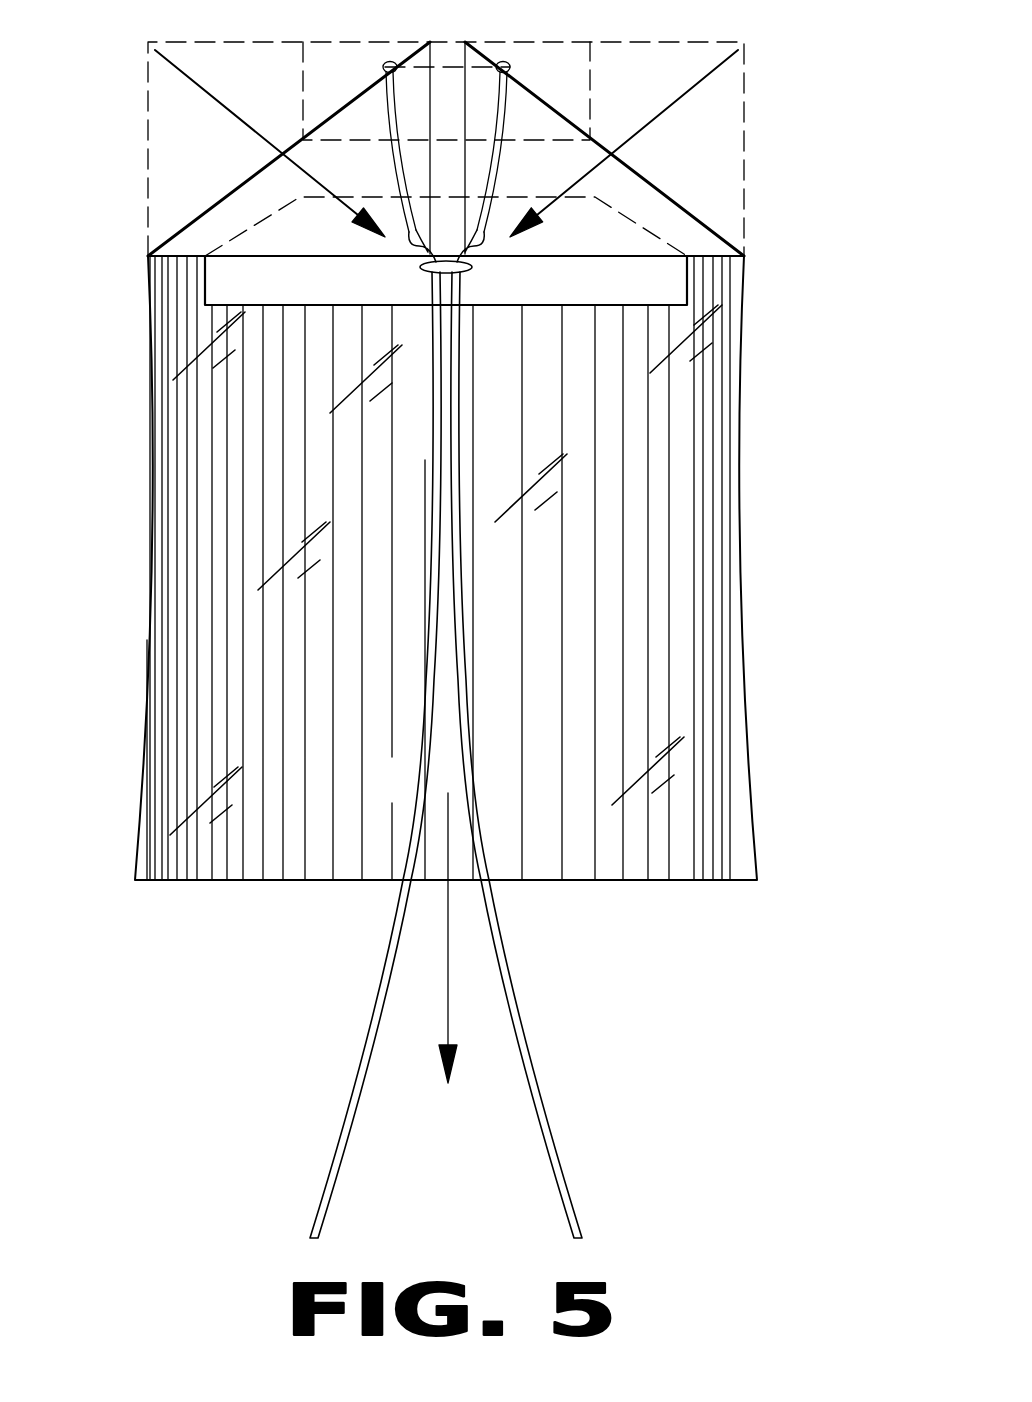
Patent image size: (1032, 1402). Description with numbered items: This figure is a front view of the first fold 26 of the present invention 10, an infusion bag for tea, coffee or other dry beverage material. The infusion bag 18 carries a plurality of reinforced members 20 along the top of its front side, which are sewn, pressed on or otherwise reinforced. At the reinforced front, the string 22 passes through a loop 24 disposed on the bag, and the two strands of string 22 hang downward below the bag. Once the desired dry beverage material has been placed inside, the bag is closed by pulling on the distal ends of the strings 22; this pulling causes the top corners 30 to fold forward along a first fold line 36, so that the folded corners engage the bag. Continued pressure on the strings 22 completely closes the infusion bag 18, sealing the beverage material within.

The present invention 10 is at (481, 623).
The infusion bag 18 is at (200, 698).
The reinforced members 20 is at (228, 272).
The strings 22 is at (560, 1182).
The loop 24 is at (472, 270).
The first fold 26 is at (200, 88).
The top corners 30 is at (148, 68).
The first fold line 36 is at (233, 190).